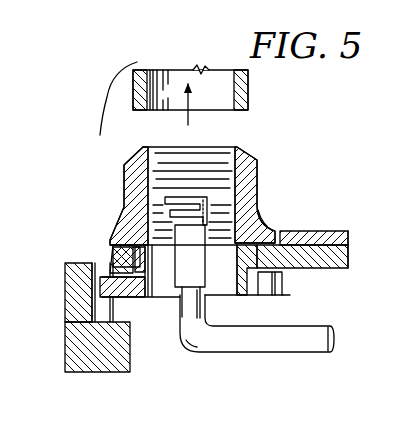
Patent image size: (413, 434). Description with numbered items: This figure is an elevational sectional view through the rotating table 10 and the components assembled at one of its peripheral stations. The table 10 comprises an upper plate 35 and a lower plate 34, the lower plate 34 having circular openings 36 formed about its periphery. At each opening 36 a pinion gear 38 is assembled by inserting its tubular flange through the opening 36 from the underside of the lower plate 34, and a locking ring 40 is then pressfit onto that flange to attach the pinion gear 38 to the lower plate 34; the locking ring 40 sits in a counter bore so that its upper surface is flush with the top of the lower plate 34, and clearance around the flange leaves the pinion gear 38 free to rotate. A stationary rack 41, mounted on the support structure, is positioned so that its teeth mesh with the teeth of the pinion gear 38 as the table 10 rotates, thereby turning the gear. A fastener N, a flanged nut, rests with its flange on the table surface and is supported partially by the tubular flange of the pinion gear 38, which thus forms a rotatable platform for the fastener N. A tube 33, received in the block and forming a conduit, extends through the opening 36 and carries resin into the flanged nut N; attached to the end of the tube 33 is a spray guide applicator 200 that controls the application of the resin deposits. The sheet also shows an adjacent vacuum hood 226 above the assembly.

The cap 226 is at (253, 86).
The fastener N is at (260, 180).
The locking ring 40 is at (276, 227).
The upper plate 35 is at (322, 225).
The lower plate 34 is at (334, 269).
The table 10 is at (357, 243).
The circular opening 36 is at (240, 282).
The pinion gear 38 is at (288, 297).
The rack 41 is at (63, 264).
The spray guide applicator 200 is at (168, 258).
The tube 33 is at (286, 353).